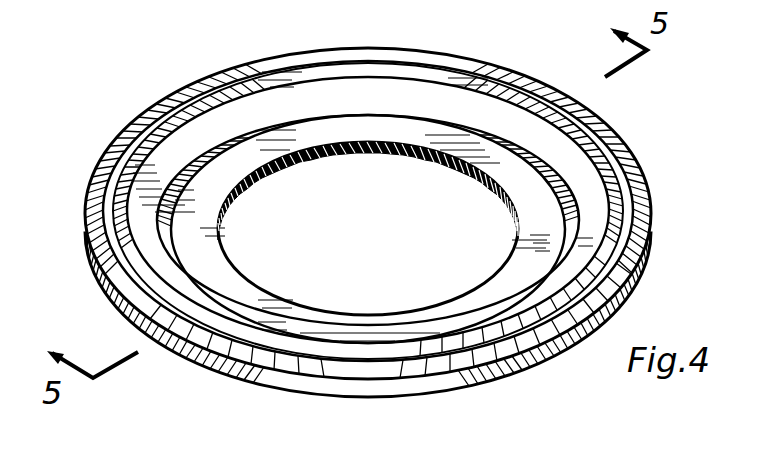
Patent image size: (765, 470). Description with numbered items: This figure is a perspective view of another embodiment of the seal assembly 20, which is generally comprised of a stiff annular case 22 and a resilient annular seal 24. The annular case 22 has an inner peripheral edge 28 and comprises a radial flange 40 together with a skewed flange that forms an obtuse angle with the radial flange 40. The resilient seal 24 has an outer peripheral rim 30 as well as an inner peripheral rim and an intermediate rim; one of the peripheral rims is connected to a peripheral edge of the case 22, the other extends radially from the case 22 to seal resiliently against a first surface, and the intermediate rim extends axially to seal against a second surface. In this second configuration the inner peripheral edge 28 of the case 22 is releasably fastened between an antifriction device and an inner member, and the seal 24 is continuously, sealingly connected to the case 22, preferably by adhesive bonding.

The seal assembly 20 is at (132, 106).
The annular case 22 is at (483, 171).
The annular seal 24 is at (246, 356).
The inner peripheral edge 28 is at (368, 147).
The outer peripheral rim 30 is at (651, 237).
The radial flange 40 is at (270, 163).